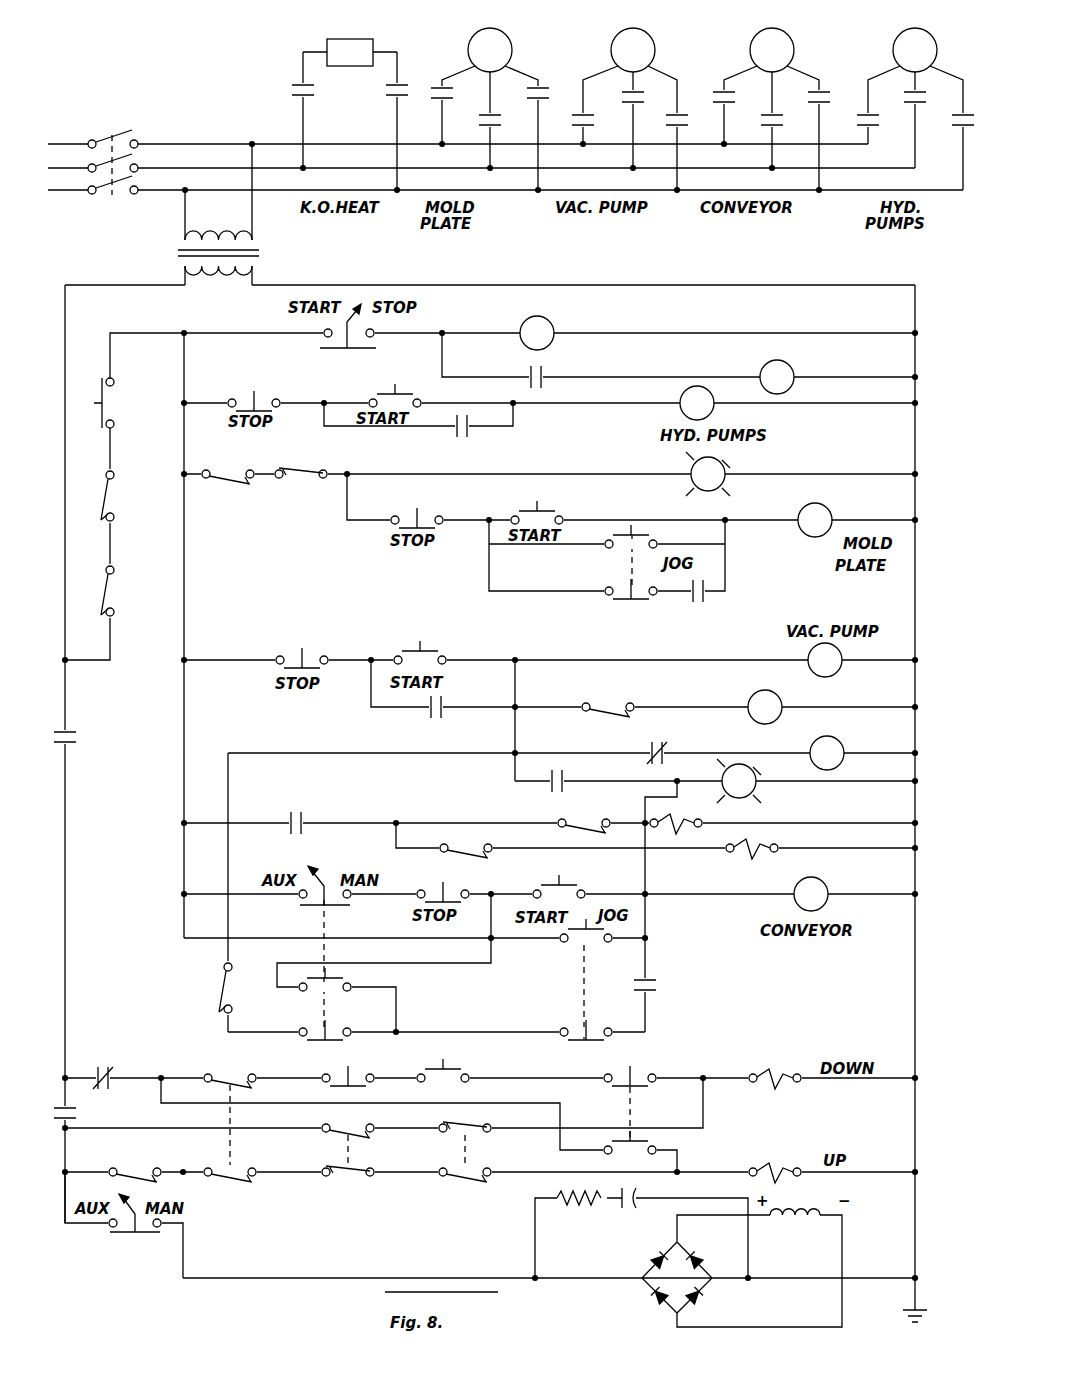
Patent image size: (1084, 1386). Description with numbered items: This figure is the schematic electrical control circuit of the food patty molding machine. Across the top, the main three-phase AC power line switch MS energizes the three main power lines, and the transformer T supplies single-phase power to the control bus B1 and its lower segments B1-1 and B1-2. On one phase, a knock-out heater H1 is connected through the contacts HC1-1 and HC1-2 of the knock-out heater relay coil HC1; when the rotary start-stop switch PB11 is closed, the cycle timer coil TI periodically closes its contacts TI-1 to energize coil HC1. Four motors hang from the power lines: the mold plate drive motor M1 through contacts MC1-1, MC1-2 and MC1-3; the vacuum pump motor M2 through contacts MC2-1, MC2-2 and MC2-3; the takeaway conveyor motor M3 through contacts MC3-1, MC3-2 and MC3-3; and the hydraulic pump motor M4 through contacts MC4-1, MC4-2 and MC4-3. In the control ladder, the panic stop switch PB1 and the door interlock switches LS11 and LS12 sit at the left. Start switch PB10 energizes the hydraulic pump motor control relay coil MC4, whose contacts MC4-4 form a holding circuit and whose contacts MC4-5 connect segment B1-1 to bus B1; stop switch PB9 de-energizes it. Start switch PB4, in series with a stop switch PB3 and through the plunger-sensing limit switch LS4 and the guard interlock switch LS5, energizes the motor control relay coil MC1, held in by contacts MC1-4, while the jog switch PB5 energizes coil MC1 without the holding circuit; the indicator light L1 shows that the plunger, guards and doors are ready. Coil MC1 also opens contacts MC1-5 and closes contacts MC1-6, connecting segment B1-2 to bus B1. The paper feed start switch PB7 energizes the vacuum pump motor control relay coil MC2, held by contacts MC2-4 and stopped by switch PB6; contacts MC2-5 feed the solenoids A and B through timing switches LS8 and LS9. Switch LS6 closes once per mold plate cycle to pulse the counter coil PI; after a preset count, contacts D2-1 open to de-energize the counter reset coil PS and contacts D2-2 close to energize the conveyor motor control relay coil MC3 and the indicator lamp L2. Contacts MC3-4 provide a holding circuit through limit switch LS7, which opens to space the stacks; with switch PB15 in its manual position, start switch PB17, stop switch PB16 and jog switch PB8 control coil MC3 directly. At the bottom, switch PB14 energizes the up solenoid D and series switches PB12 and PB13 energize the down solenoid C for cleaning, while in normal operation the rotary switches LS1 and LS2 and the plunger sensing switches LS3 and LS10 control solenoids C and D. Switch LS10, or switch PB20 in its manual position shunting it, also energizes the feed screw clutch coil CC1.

The main three-phase AC power line switch MS is at (132, 132).
The knock-out heater relay contacts HC1-1 is at (296, 84).
The knock-out heater H1 is at (350, 52).
The knock-out heater relay contacts HC1-2 is at (390, 98).
The mold plate motor control relay contacts MC1-1 is at (444, 78).
The mold plate drive motor M1 is at (490, 50).
The mold plate motor control relay contacts MC1-3 is at (540, 68).
The mold plate motor control relay contacts MC1-2 is at (482, 134).
The vacuum pump motor control relay contacts MC2-1 is at (602, 124).
The vacuum pump motor control relay contacts MC2-2 is at (618, 112).
The vacuum pump motor M2 is at (633, 50).
The conveyor motor control relay contacts MC3-1 is at (724, 79).
The vacuum pump motor control relay contacts MC2-3 is at (684, 132).
The conveyor motor control relay contacts MC3-2 is at (760, 112).
The takeaway conveyor motor M3 is at (772, 50).
The conveyor motor control relay contacts MC3-3 is at (829, 80).
The hydraulic pump motor control relay contacts MC4-3 is at (966, 108).
The hydraulic pump motor M4 is at (915, 50).
The hydraulic pump motor control relay contacts MC4-1 is at (902, 148).
The hydraulic pump motor control relay contacts MC4-2 is at (930, 106).
The transformer T is at (256, 252).
The AC control bus B1 is at (66, 306).
The lower bus segment B1-1 is at (66, 886).
The lower bus segment B1-2 is at (62, 1228).
The rotary start-stop switch PB11 is at (320, 343).
The cycle timer coil TI is at (553, 324).
The timer contacts TI-1 is at (540, 370).
The knock-out heater relay coil HC1 is at (792, 366).
The panic stop switch PB1 is at (112, 392).
The stop switch PB9 is at (260, 410).
The start switch PB10 is at (376, 391).
The hydraulic pump relay holding contacts MC4-4 is at (464, 438).
The hydraulic pump motor control relay coil MC4 is at (682, 406).
The knock-out guard interlock switch LS5 is at (234, 466).
The plunger position limit switch LS4 is at (312, 470).
The indicator light L1 is at (688, 470).
The door interlock switch LS11 is at (112, 496).
The door interlock switch LS12 is at (112, 592).
The mold plate stop push button PB3 is at (414, 516).
The mold plate start switch PB4 is at (552, 514).
The mold plate motor control relay coil MC1 is at (830, 514).
The mold plate jog switch PB5 is at (620, 556).
The mold plate relay holding contacts MC1-4 is at (695, 604).
The stop switch PB6 is at (296, 658).
The paper feed start switch PB7 is at (428, 658).
The vacuum pump relay holding contacts MC2-4 is at (433, 715).
The vacuum pump motor control relay coil MC2 is at (838, 672).
The counter switch LS6 is at (622, 706).
The counter coil PI is at (748, 705).
The hydraulic pump relay contacts MC4-5 is at (78, 738).
The counter contacts D2-1 is at (666, 754).
The counter reset coil PS is at (842, 752).
The counter contacts D2-2 is at (554, 788).
The indicator lamp L2 is at (764, 792).
The vacuum pump relay contacts MC2-5 is at (300, 810).
The timing switch LS8 is at (576, 824).
The solenoid A is at (676, 816).
The timing switch LS9 is at (450, 860).
The solenoid B is at (736, 874).
The automatic-manual conveyor switch PB15 is at (320, 909).
The conveyor stop switch PB16 is at (460, 900).
The conveyor start switch PB17 is at (562, 894).
The conveyor motor control relay coil MC3 is at (830, 892).
The conveyor jog switch PB8 is at (582, 946).
The conveyor limit switch LS7 is at (223, 986).
The conveyor relay holding contacts MC3-4 is at (654, 987).
The mold plate relay contacts MC1-5 is at (112, 1062).
The plunger down switch PB12 is at (339, 1078).
The plunger down switch PB13 is at (448, 1074).
The down solenoid C is at (760, 1076).
The mold plate relay contacts MC1-6 is at (78, 1114).
The plunger up switch PB14 is at (634, 1093).
The plunger position sensing switch LS10 is at (142, 1164).
The plunger position sensing switch LS3 is at (238, 1170).
The rotary control switch LS2 is at (358, 1142).
The rotary control switch LS1 is at (484, 1140).
The up solenoid D is at (764, 1168).
The automatic-manual feed switch PB20 is at (134, 1227).
The electrical clutch operating coil CC1 is at (806, 1224).